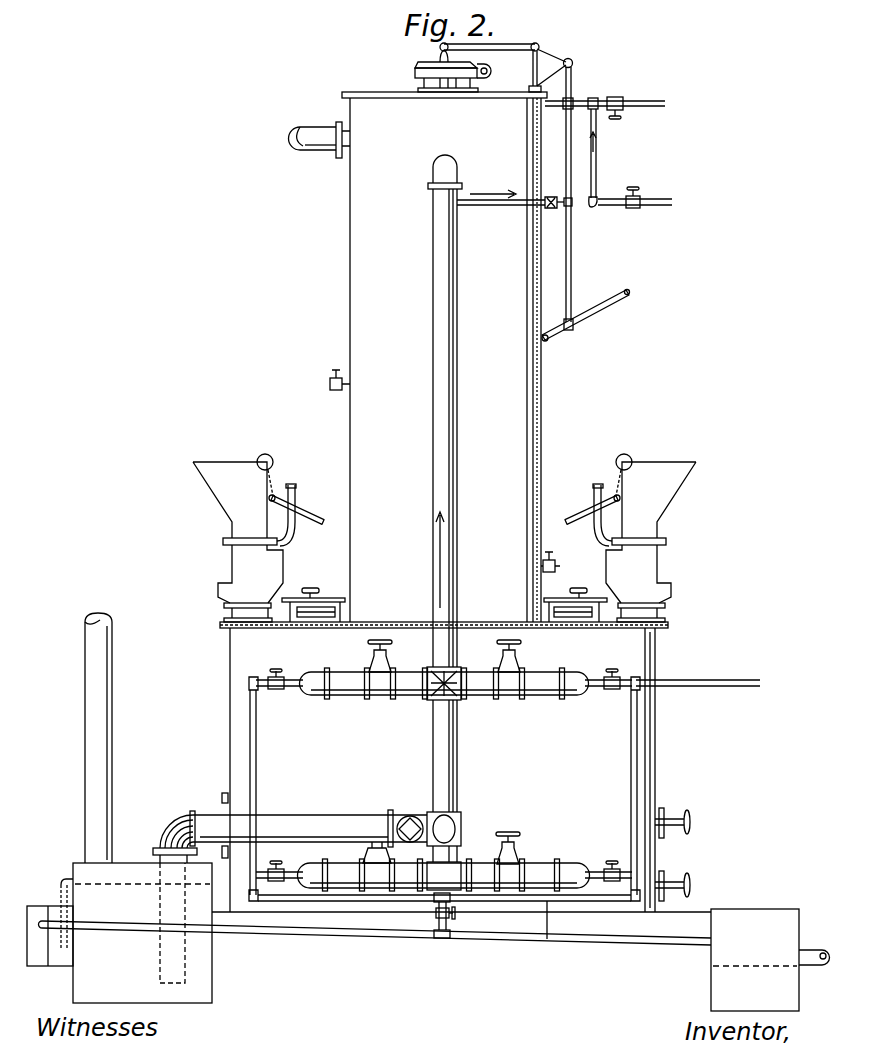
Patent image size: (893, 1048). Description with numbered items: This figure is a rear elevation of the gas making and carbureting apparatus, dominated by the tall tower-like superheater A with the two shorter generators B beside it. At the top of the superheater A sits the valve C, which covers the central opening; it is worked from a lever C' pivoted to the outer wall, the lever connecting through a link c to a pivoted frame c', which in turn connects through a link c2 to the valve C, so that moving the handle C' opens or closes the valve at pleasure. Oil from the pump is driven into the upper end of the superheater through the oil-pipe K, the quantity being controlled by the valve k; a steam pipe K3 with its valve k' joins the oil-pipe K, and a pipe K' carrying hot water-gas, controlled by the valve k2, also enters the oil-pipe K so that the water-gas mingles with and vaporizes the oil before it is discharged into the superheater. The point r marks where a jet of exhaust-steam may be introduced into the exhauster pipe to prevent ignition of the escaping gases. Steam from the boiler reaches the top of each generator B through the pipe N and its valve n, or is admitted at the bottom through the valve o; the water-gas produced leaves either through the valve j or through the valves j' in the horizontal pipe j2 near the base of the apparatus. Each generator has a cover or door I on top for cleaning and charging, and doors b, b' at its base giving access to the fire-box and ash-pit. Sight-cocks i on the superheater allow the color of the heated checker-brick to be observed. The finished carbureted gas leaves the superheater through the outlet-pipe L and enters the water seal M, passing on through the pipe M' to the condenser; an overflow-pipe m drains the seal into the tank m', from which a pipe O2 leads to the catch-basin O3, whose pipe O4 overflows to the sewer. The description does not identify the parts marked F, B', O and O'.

The superheater A is at (444, 360).
The generator B is at (461, 770).
The valve C is at (433, 76).
The link c2 is at (503, 67).
The pivoted frame c' is at (565, 50).
The link c is at (575, 194).
The lever C' is at (586, 316).
The oil-pipe K is at (605, 90).
The valve k is at (621, 129).
The pipe K' is at (550, 152).
The valve k2 is at (548, 208).
The steam pipe K3 is at (625, 206).
The valve k' is at (648, 192).
The steam-jet point r is at (319, 132).
The central gas pipe F is at (433, 503).
The hopper B' is at (440, 538).
The cover or door I is at (312, 612).
The valve j is at (444, 669).
The valve j' is at (455, 779).
The horizontal pipe j2 is at (476, 842).
The valve n is at (276, 675).
The steam pipe N is at (692, 680).
The drain pipe O is at (446, 789).
The valve o is at (612, 858).
The drain branch pipe O' is at (494, 929).
The pipe O2 is at (395, 940).
The catch-basin O3 is at (755, 960).
The pipe O4 is at (810, 950).
The outlet-pipe L is at (290, 820).
The sight-cock i is at (410, 816).
The water seal M is at (142, 933).
The pipe M' is at (116, 738).
The overflow-pipe m is at (59, 896).
The tank m' is at (50, 952).
The door b is at (670, 770).
The door b' is at (683, 878).